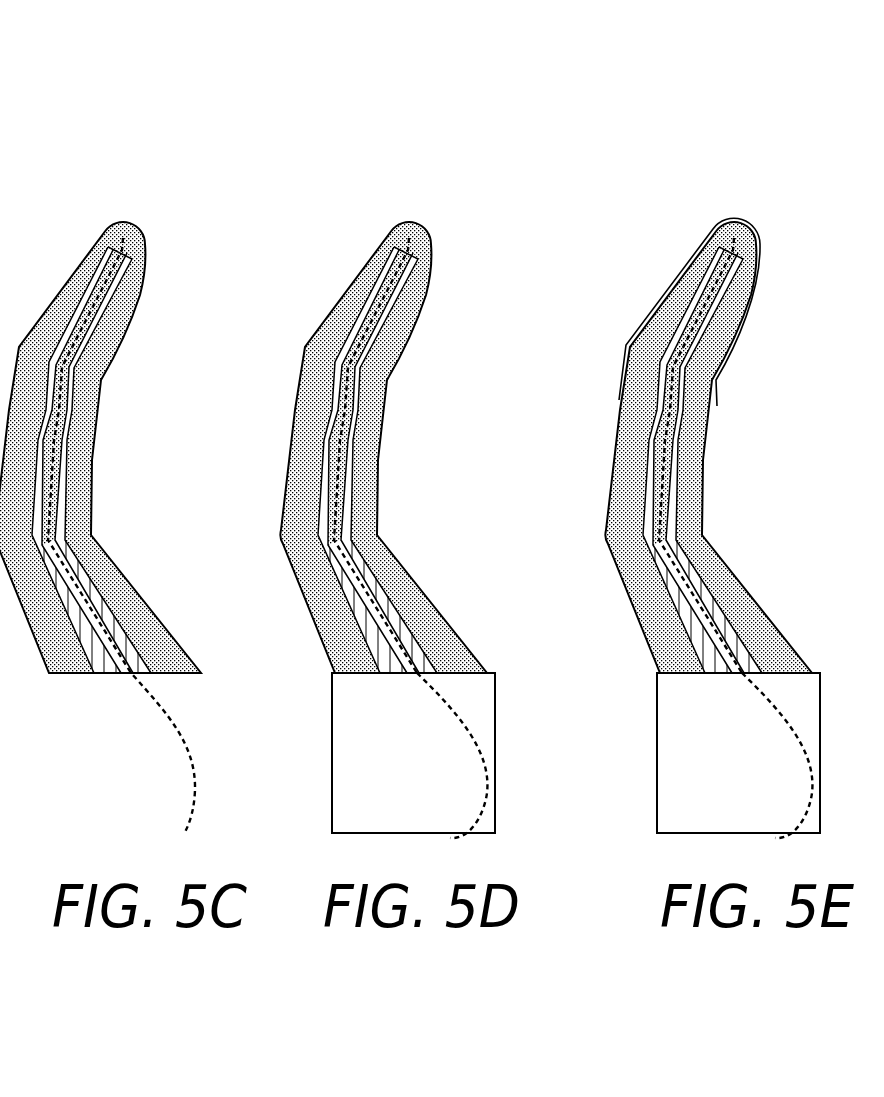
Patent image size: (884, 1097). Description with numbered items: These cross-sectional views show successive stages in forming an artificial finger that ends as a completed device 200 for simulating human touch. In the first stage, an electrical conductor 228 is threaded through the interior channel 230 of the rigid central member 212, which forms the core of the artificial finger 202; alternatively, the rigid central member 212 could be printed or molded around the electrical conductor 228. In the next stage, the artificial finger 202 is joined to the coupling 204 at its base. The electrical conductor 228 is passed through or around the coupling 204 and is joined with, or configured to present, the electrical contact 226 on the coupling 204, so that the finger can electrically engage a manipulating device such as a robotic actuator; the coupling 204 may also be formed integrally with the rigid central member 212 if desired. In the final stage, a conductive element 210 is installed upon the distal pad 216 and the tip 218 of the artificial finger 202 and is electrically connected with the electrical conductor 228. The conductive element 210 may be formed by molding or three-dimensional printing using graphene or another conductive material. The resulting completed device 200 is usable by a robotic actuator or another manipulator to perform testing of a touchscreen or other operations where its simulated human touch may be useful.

In FIG. 5E, the device 200 is at (745, 167).
In FIG. 5C, the artificial finger 202 is at (106, 535).
In FIG. 5D, the artificial finger 202 is at (405, 535).
In FIG. 5E, the artificial finger 202 is at (725, 535).
In FIG. 5D, the coupling 204 is at (332, 702).
In FIG. 5E, the coupling 204 is at (658, 707).
In FIG. 5E, the conductive element 210 is at (713, 223).
In FIG. 5C, the rigid central member 212 is at (68, 407).
In FIG. 5E, the distal pad 216 is at (759, 320).
In FIG. 5D, the tip 218 is at (420, 215).
In FIG. 5E, the tip 218 is at (752, 208).
In FIG. 5D, the electrical contact 226 is at (440, 833).
In FIG. 5E, the electrical contact 226 is at (770, 833).
In FIG. 5C, the electrical conductor 228 is at (197, 787).
In FIG. 5D, the electrical conductor 228 is at (485, 767).
In FIG. 5E, the electrical conductor 228 is at (810, 767).
In FIG. 5C, the interior channel 230 is at (123, 241).
In FIG. 5D, the interior channel 230 is at (414, 243).
In FIG. 5E, the interior channel 230 is at (738, 239).